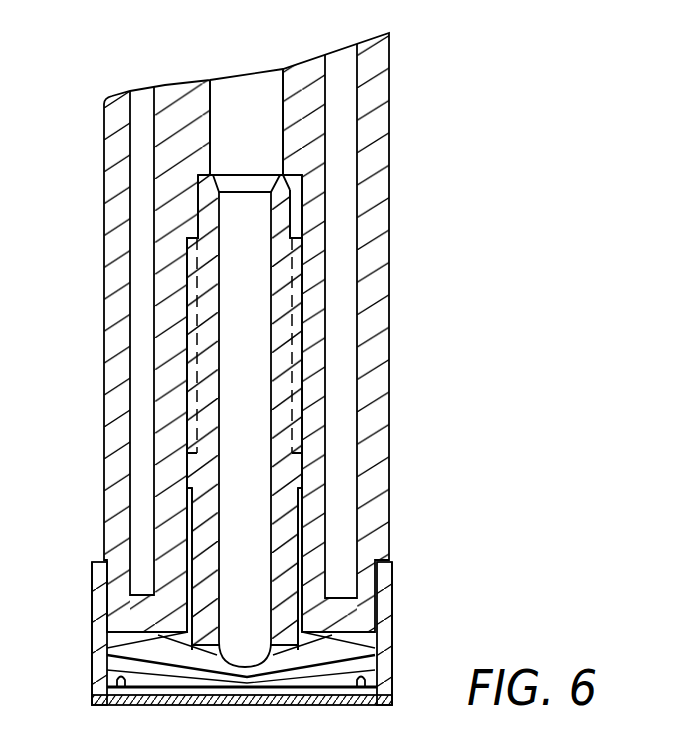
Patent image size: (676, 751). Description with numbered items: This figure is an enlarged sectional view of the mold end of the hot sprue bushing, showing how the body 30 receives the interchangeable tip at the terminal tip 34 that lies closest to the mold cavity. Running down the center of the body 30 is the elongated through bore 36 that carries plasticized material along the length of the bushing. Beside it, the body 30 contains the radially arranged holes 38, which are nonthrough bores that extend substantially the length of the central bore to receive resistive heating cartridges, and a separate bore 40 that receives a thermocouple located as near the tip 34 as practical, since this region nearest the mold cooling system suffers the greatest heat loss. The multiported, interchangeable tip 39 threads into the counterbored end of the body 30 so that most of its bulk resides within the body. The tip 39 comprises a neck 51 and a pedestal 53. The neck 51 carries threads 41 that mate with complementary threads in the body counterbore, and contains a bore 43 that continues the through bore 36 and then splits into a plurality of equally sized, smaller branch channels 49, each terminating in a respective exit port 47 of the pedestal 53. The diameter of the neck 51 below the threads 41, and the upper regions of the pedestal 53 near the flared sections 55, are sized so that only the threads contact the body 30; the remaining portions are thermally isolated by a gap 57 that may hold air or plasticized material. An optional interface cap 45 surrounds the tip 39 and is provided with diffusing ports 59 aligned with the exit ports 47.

The body 30 is at (392, 149).
The tip 34 is at (426, 528).
The through bore 36 is at (285, 80).
The holes 38 is at (140, 179).
The multiported, interchangeable tip 39 is at (298, 228).
The bore 40 is at (358, 66).
The threads 41 is at (288, 296).
The bore 43 is at (222, 212).
The interface cap 45 is at (384, 596).
The exit port 47 is at (122, 690).
The branch channels 49 is at (178, 668).
The neck 51 is at (180, 469).
The pedestal 53 is at (156, 650).
The flared sections 55 is at (374, 634).
The gap 57 is at (295, 528).
The diffusing ports 59 is at (384, 674).